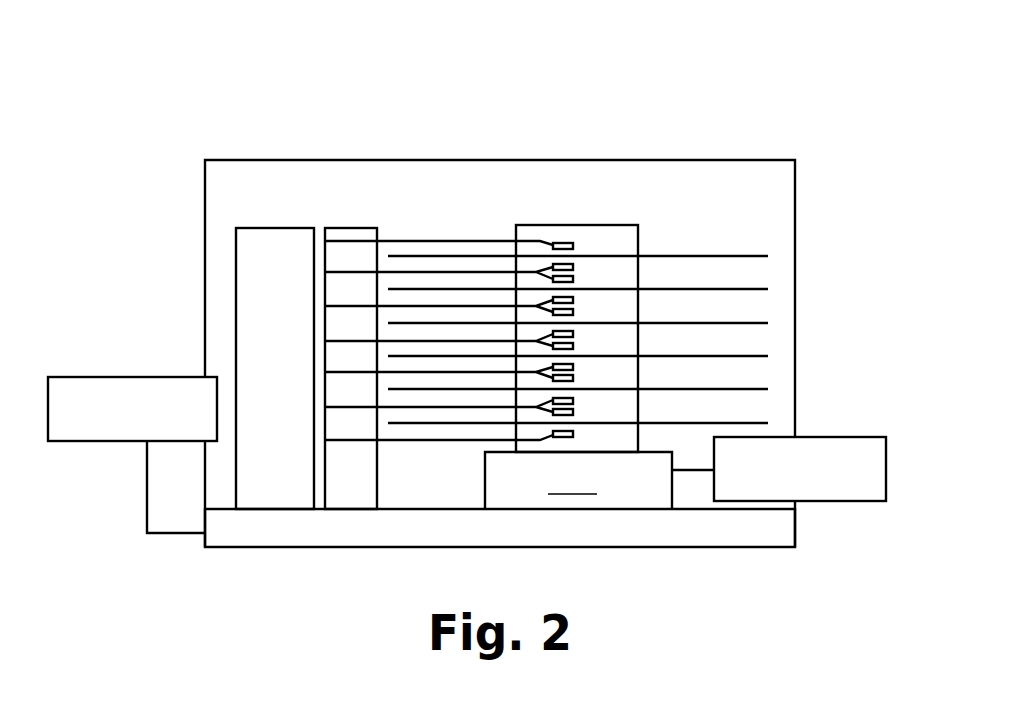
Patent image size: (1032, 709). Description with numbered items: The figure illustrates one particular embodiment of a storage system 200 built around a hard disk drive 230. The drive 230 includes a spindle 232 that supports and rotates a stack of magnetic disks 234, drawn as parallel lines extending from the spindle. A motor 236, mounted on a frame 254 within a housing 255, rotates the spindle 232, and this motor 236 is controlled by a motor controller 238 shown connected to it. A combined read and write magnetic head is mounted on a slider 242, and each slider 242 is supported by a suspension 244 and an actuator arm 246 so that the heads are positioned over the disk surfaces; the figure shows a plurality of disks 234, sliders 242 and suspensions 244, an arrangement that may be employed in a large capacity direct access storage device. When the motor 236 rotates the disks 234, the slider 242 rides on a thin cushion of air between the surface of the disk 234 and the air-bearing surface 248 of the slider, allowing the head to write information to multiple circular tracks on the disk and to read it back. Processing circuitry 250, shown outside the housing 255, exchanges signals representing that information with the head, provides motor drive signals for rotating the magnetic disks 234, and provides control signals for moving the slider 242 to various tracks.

The storage system 200 is at (203, 101).
The hard disk drive 230 is at (697, 227).
The spindle 232 is at (628, 225).
The magnetic disks 234 is at (768, 256).
The motor 236 is at (599, 480).
The motor controller 238 is at (833, 501).
The slider 242 is at (575, 266).
The suspension 244 is at (548, 268).
The actuator arm 246 is at (488, 272).
The air-bearing surface 248 is at (598, 382).
The processing circuitry 250 is at (126, 377).
The frame 254 is at (253, 548).
The housing 255 is at (729, 158).